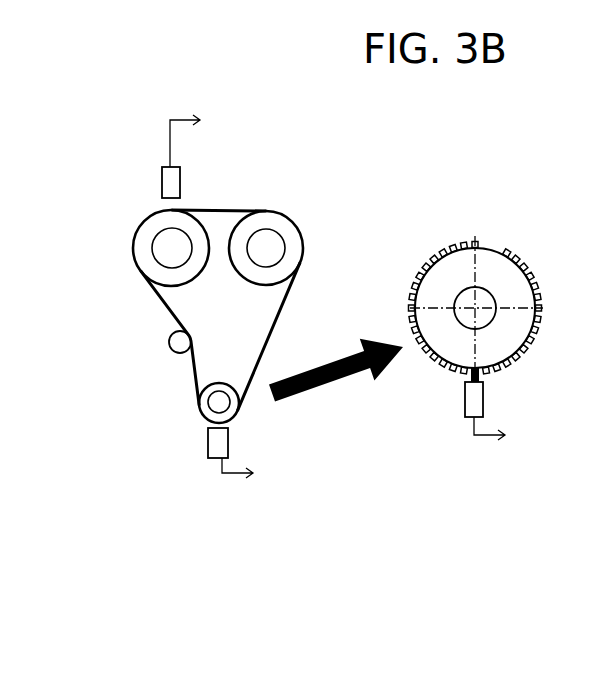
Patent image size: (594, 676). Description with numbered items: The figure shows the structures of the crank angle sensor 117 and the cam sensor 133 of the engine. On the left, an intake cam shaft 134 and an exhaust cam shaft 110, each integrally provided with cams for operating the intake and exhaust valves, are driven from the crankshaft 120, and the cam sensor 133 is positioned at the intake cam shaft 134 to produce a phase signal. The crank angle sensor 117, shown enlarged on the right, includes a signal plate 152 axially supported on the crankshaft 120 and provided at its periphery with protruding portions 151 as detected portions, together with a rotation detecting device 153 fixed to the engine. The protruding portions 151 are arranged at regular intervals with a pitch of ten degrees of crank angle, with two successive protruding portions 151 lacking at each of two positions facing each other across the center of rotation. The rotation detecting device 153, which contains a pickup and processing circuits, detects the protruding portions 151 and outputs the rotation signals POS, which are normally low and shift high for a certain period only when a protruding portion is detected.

The exhaust cam shaft 110 is at (267, 250).
The intake cam shaft 134 is at (160, 249).
The crankshaft 120 is at (200, 405).
The cam sensor 133 is at (172, 165).
The rotation detecting device 153 is at (217, 452).
The crank angle sensor 117 is at (500, 275).
The protruding portions 151 is at (528, 280).
The signal plate 152 is at (507, 334).